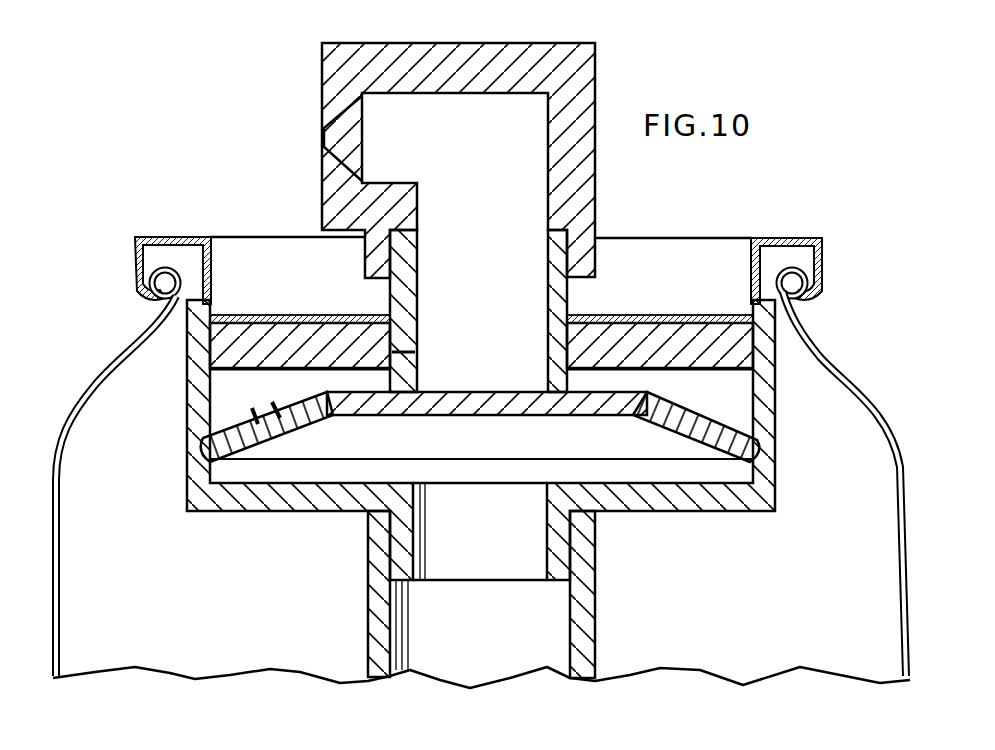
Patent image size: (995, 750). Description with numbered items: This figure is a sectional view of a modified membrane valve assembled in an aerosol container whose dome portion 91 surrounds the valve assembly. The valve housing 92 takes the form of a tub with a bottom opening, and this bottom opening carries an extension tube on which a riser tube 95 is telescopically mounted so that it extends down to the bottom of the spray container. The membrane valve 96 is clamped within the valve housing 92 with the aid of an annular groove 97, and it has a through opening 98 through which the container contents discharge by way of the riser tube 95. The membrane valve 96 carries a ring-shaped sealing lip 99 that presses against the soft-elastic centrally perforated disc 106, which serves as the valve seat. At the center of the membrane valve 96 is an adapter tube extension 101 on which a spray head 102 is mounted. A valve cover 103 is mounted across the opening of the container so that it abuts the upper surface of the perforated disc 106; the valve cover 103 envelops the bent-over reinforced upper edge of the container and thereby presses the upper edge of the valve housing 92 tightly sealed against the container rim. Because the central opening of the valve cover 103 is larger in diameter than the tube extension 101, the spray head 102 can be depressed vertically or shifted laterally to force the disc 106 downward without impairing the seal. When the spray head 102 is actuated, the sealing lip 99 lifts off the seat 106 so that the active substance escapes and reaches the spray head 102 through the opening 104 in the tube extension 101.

The dome portion 91 is at (70, 417).
The valve housing 92 is at (190, 472).
The riser tube 95 is at (380, 543).
The membrane valve 96 is at (222, 421).
The annular groove 97 is at (203, 451).
The through opening 98 is at (266, 422).
The ring-shaped sealing lip 99 is at (641, 368).
The adapter tube extension 101 is at (584, 221).
The spray head 102 is at (590, 74).
The valve cover 103 is at (766, 237).
The opening 104 is at (412, 352).
The soft-elastic centrally perforated disc 106 is at (675, 335).